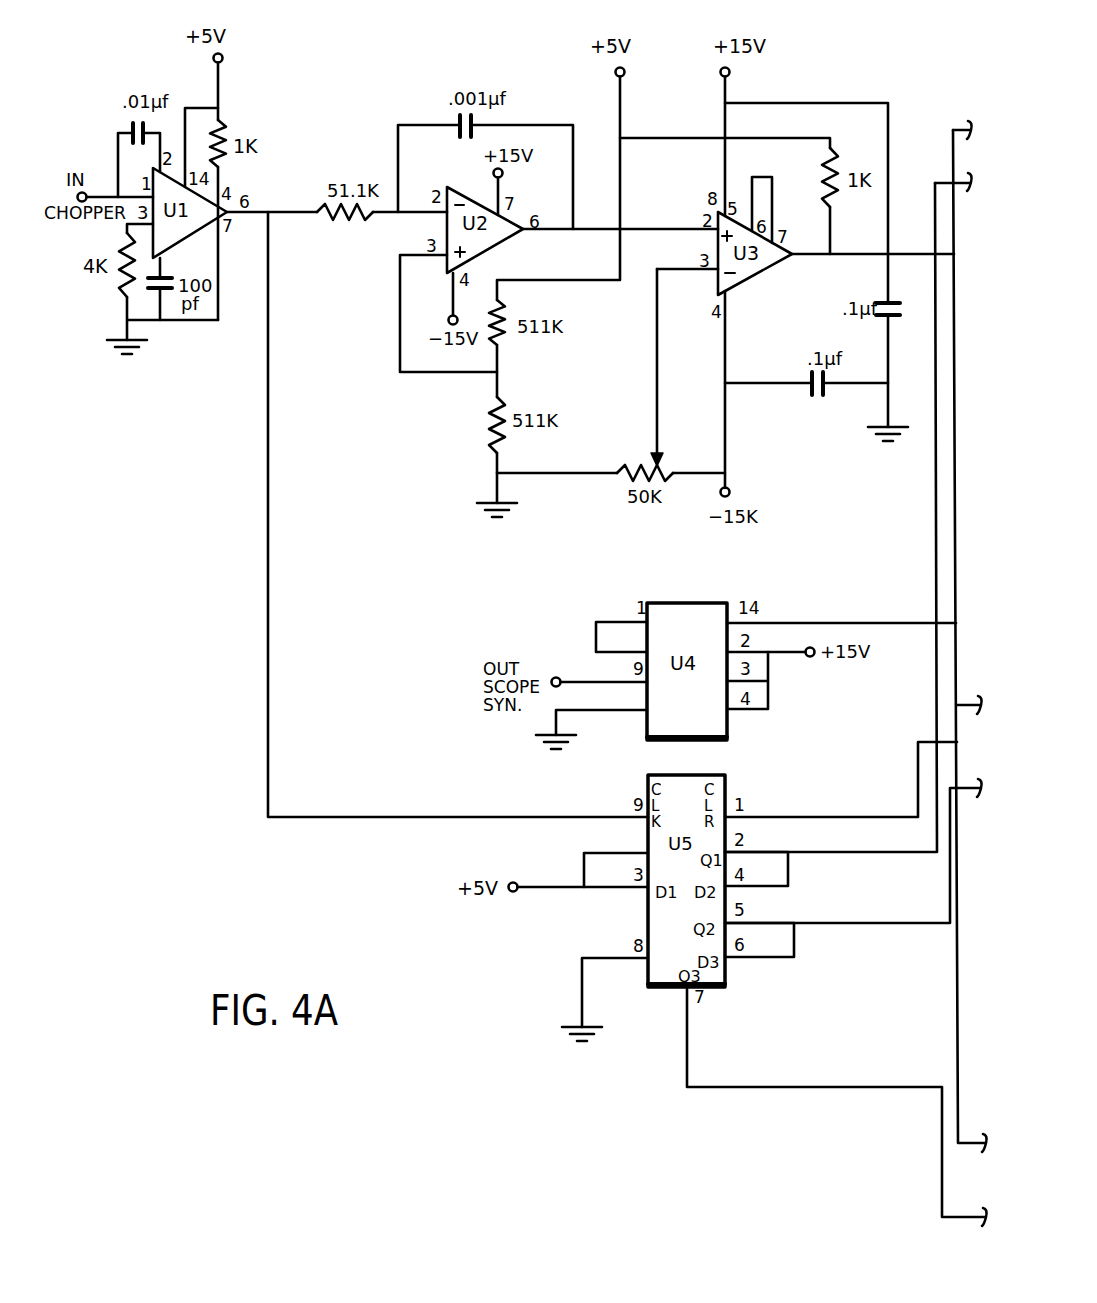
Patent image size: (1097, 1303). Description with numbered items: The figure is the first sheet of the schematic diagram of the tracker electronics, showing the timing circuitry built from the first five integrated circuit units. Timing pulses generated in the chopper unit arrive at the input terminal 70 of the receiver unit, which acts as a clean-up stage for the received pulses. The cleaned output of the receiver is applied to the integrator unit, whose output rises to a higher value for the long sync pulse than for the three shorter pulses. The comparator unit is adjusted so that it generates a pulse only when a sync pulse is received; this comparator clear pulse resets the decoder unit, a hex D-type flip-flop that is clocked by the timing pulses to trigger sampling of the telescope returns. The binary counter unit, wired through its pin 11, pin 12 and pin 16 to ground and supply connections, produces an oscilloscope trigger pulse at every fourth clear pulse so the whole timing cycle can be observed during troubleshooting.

The input terminal 70 is at (86, 193).
The U4 pin 11 ground connection 11 is at (595, 719).
The U4 pin 12 connection 12 is at (621, 637).
The U5 pin 16 connection 16 is at (616, 858).